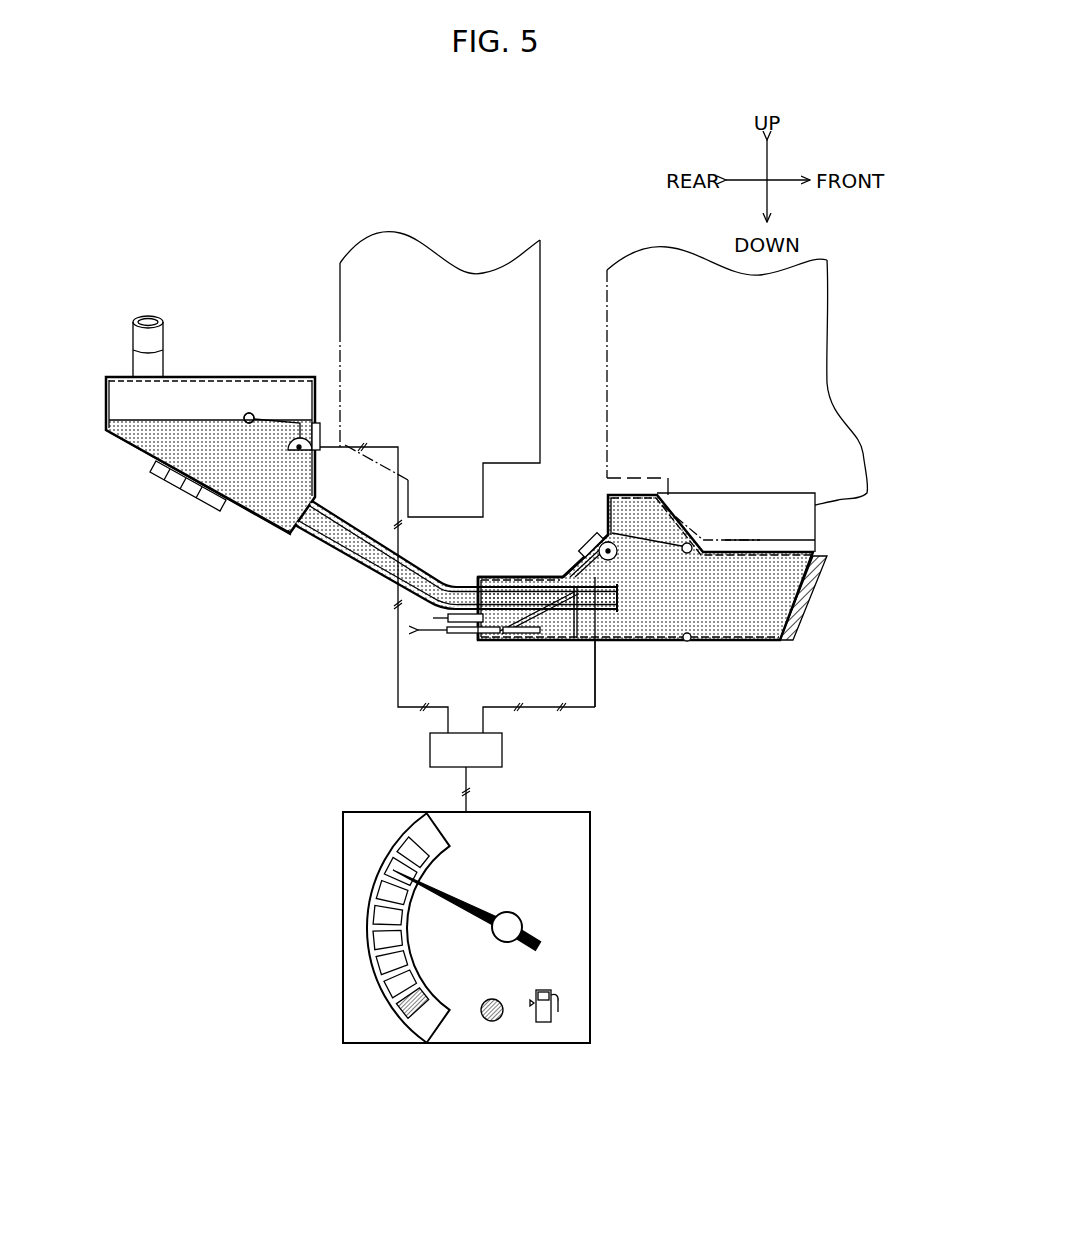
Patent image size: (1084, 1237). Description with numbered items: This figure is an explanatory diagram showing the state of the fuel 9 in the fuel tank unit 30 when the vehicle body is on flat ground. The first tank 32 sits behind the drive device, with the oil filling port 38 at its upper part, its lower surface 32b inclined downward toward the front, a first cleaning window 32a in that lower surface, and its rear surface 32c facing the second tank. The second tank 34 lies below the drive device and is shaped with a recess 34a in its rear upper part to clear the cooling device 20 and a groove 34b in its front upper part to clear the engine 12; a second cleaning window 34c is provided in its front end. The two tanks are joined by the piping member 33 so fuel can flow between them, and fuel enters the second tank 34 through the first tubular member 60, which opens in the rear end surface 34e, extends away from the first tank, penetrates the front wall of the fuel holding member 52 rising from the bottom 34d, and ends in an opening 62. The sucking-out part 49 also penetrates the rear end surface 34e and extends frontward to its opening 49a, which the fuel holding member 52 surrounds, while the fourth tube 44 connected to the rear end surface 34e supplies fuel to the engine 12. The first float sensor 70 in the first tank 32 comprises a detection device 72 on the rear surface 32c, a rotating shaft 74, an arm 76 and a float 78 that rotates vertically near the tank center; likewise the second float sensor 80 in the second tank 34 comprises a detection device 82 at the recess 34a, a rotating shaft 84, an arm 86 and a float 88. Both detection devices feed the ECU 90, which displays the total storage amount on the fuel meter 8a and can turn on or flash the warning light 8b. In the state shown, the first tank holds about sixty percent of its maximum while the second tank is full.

The fuel meter 8a is at (498, 927).
The warning light 8b is at (500, 1002).
The fuel 9 is at (752, 560).
The engine 12 is at (640, 285).
The cooling device 20 is at (350, 268).
The fuel tank unit 30 is at (288, 610).
The first tank 32 is at (154, 464).
The first cleaning window 32a is at (197, 491).
The lower surface 32b is at (285, 536).
The rear surface 32c is at (318, 480).
The piping member 33 is at (350, 547).
The second tank 34 is at (629, 579).
The recess 34a is at (566, 567).
The groove 34b is at (785, 506).
The second cleaning window 34c is at (805, 610).
The bottom 34d is at (690, 642).
The rear end surface 34e is at (476, 641).
The oil filling port 38 is at (148, 318).
The fourth tube 44 is at (470, 613).
The sucking-out part 49 is at (484, 635).
The opening 49a is at (530, 635).
The fuel holding member 52 is at (575, 642).
The first tubular member 60 is at (497, 580).
The opening 62 is at (600, 618).
The first float sensor 70 is at (294, 410).
The detection device 72 is at (322, 432).
The rotating shaft 74 is at (308, 446).
The arm 76 is at (275, 419).
The float 78 is at (243, 417).
The second float sensor 80 is at (642, 497).
The detection device 82 is at (596, 541).
The rotating shaft 84 is at (568, 568).
The arm 86 is at (680, 538).
The float 88 is at (693, 547).
The ECU 90 is at (502, 750).